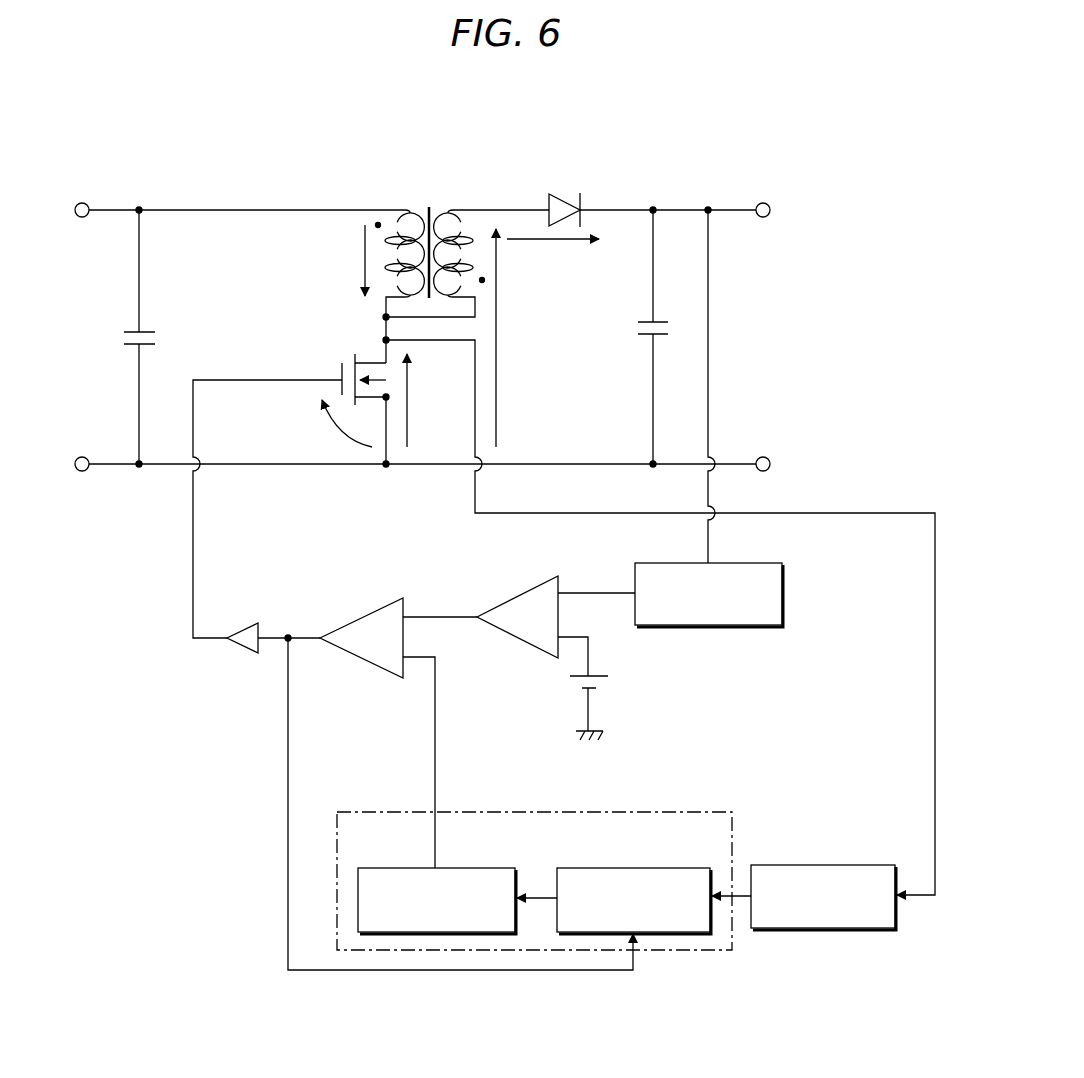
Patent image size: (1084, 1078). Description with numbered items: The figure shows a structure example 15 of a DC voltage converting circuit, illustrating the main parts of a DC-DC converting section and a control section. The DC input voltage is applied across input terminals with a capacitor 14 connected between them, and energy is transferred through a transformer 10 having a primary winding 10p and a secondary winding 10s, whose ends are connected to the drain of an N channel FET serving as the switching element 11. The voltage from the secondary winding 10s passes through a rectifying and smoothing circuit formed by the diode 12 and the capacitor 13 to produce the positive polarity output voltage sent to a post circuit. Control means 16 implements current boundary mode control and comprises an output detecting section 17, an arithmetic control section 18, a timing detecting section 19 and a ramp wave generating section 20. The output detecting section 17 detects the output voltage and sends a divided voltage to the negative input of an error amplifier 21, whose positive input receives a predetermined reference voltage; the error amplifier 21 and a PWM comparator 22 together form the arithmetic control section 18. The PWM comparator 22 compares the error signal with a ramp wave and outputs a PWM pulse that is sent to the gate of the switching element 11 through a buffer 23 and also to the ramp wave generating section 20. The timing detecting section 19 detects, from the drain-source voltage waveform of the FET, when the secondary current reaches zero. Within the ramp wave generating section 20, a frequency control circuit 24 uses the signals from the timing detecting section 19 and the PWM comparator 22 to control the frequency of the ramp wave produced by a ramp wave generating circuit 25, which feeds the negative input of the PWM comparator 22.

The transformer 10 is at (380, 140).
The primary winding 10p is at (398, 208).
The secondary winding 10s is at (456, 208).
The switching element 11 is at (341, 370).
The diode 12 is at (560, 196).
The capacitor 13 is at (648, 323).
The capacitor 14 is at (131, 332).
The structure example of a DC voltage converting circuit 15 is at (270, 162).
The control means 16 is at (226, 785).
The output detecting section 17 is at (784, 593).
The arithmetic control section 18 is at (436, 566).
The timing detecting section 19 is at (822, 866).
The ramp wave generating section 20 is at (535, 812).
The error amplifier 21 is at (521, 597).
The PWM comparator 22 is at (362, 619).
The buffer 23 is at (244, 629).
The frequency control circuit 24 is at (632, 868).
The ramp wave generating circuit 25 is at (476, 868).